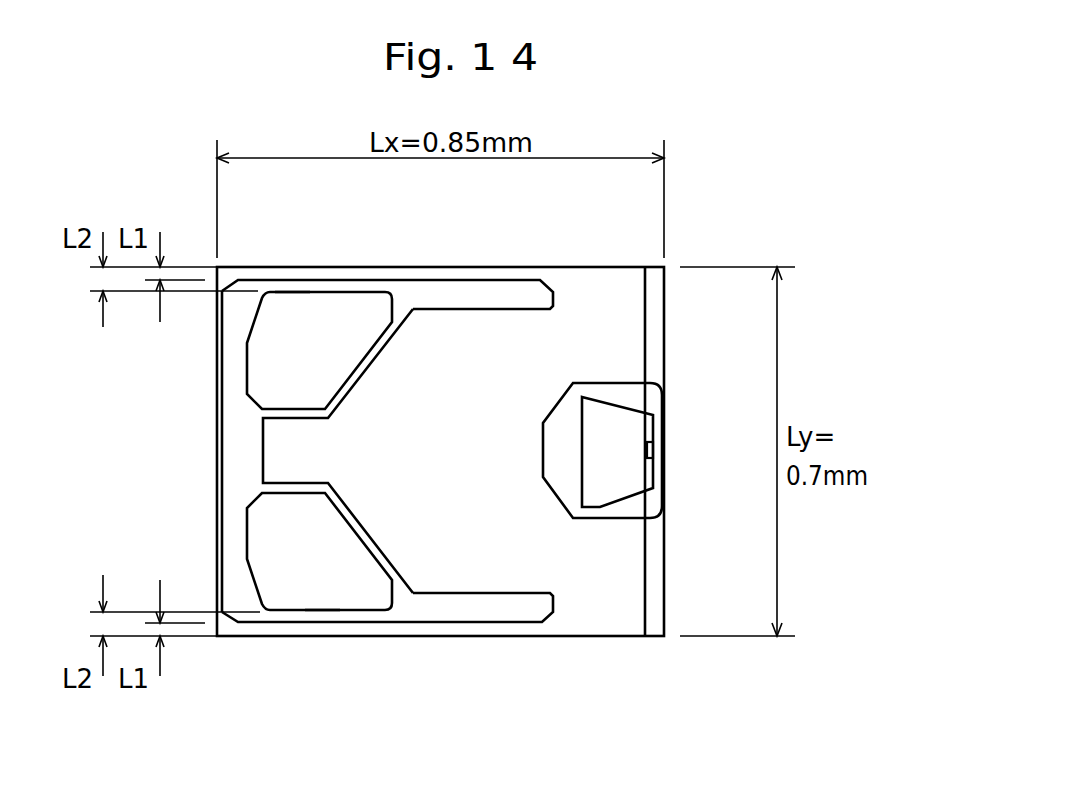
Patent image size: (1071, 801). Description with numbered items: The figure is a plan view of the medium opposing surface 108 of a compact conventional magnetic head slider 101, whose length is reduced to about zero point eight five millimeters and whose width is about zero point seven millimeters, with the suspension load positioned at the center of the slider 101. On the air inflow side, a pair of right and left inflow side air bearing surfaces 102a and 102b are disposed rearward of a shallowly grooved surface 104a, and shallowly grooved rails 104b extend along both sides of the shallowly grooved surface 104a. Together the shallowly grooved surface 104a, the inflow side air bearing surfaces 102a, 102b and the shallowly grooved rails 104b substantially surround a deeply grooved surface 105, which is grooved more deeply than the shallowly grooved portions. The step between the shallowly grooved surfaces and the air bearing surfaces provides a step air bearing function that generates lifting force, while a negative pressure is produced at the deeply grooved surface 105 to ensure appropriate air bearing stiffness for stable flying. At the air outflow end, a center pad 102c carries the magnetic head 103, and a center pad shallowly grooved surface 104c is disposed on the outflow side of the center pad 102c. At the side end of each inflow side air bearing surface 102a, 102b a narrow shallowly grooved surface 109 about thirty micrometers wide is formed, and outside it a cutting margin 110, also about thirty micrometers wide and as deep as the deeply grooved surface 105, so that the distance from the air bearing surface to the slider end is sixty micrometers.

The slider 101 is at (217, 440).
The inflow side air bearing surface 102a is at (272, 372).
The inflow side air bearing surface 102b is at (272, 546).
The center pad 102c is at (608, 420).
The magnetic head 103 is at (650, 455).
The shallowly grooved surface on the air inflow side 104a is at (232, 493).
The shallowly grooved rails 104b is at (478, 305).
The center pad shallowly grooved surface 104c is at (567, 468).
The deeply grooved surface 105 is at (497, 417).
The medium opposing surface 108 is at (323, 602).
The shallowly grooved surface 109 is at (292, 293).
The cutting margin 110 is at (380, 268).